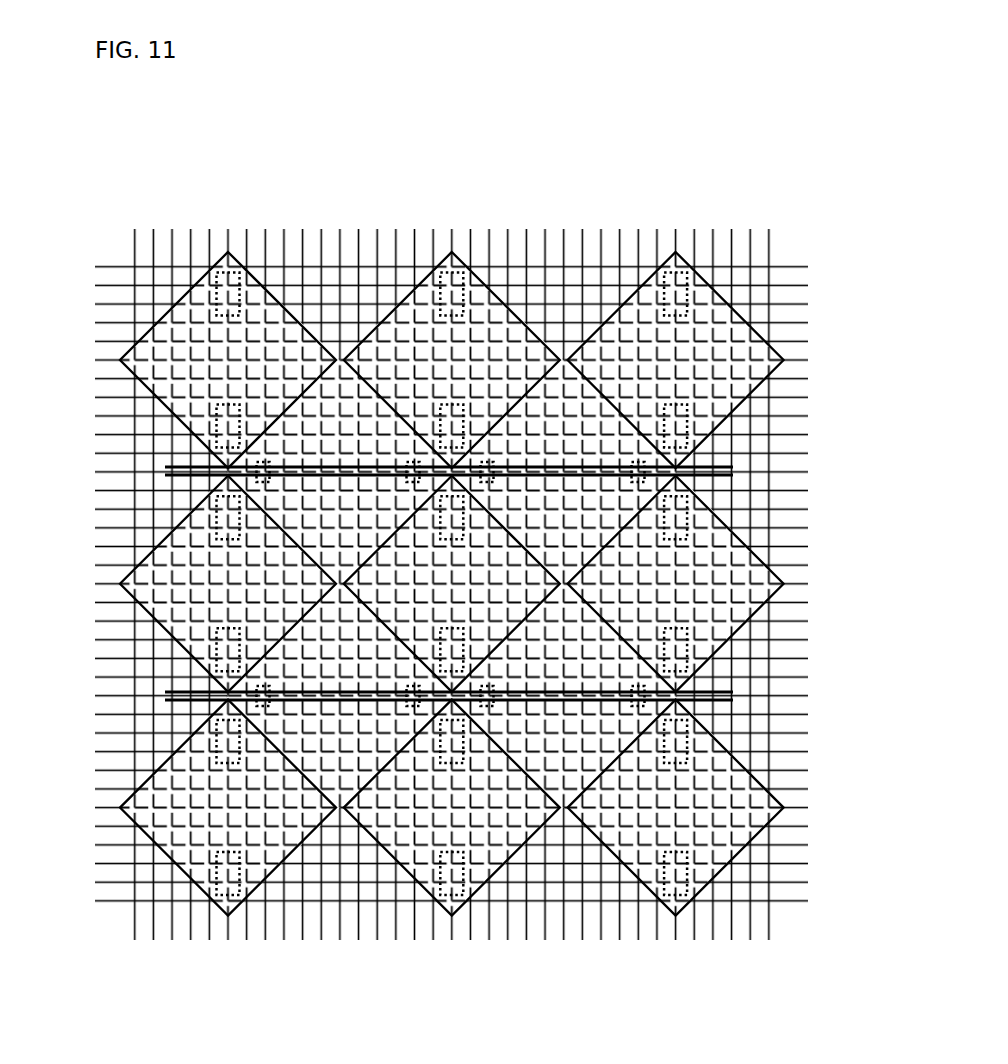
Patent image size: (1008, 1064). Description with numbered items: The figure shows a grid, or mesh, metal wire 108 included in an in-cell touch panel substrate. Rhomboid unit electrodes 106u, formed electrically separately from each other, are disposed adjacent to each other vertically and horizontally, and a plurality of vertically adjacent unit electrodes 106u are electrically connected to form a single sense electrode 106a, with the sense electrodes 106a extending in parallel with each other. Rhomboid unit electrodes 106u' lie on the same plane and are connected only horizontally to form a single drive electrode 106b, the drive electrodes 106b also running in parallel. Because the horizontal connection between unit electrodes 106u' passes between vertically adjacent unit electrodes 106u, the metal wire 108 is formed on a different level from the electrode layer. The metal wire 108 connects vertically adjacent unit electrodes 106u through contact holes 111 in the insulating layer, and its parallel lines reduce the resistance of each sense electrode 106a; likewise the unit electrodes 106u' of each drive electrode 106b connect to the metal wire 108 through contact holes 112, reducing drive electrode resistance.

The metal wire 108 is at (133, 243).
The sense electrode 106a is at (200, 280).
The drive electrode 106b is at (748, 472).
The unit electrode 106u is at (452, 584).
The unit electrode 106u' is at (465, 584).
The contact hole 111 is at (692, 416).
The contact hole 112 is at (497, 477).